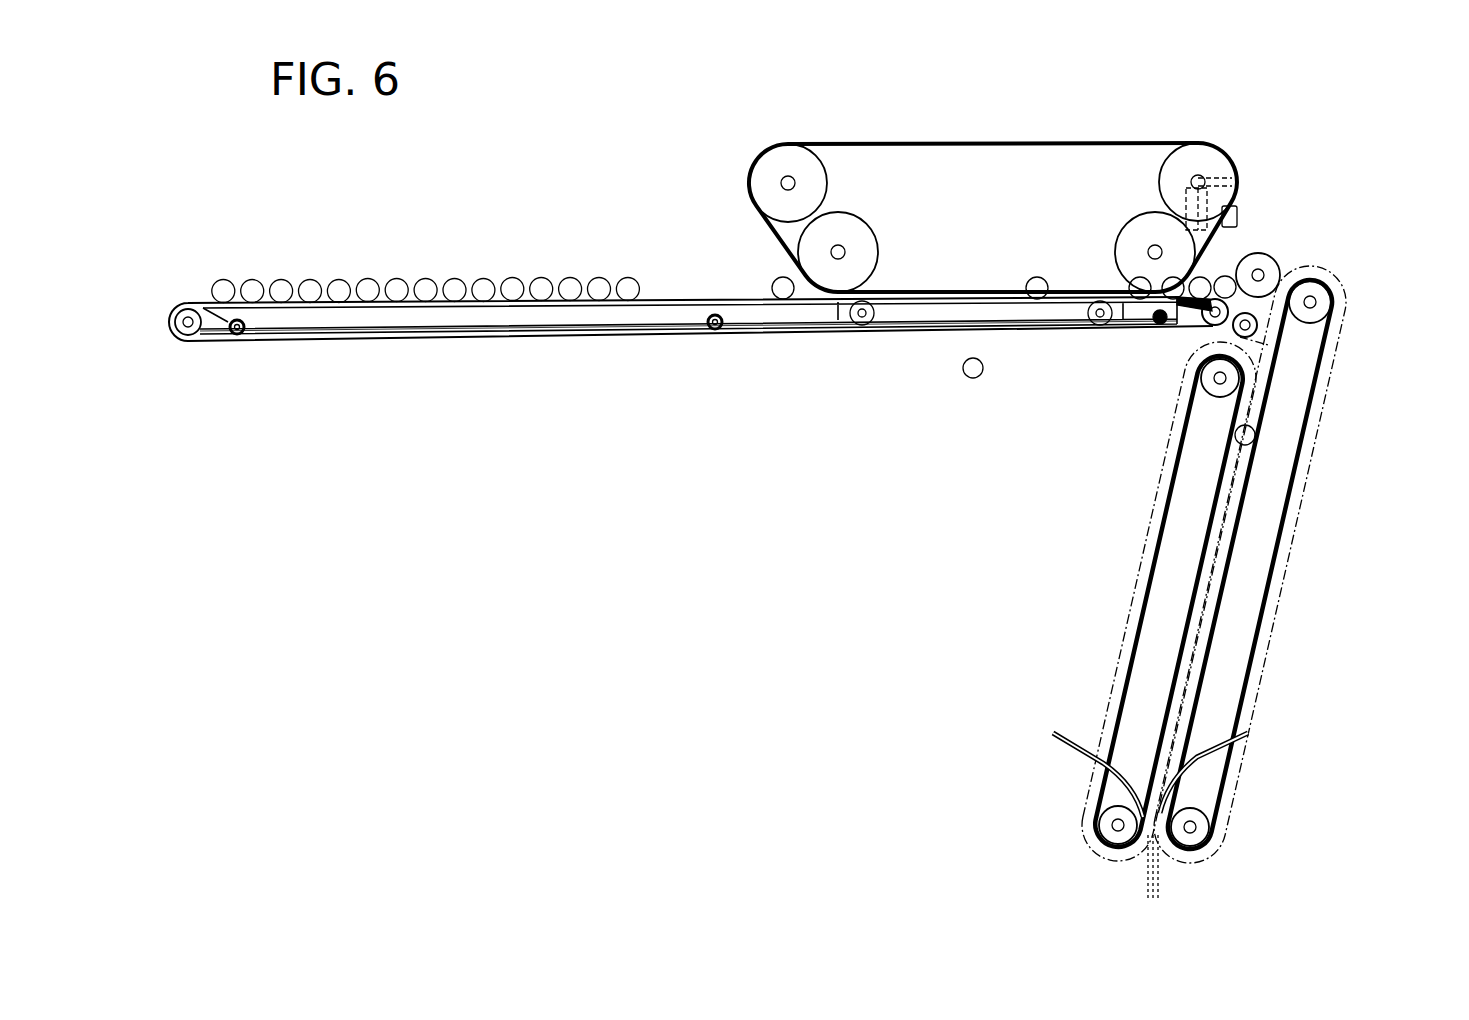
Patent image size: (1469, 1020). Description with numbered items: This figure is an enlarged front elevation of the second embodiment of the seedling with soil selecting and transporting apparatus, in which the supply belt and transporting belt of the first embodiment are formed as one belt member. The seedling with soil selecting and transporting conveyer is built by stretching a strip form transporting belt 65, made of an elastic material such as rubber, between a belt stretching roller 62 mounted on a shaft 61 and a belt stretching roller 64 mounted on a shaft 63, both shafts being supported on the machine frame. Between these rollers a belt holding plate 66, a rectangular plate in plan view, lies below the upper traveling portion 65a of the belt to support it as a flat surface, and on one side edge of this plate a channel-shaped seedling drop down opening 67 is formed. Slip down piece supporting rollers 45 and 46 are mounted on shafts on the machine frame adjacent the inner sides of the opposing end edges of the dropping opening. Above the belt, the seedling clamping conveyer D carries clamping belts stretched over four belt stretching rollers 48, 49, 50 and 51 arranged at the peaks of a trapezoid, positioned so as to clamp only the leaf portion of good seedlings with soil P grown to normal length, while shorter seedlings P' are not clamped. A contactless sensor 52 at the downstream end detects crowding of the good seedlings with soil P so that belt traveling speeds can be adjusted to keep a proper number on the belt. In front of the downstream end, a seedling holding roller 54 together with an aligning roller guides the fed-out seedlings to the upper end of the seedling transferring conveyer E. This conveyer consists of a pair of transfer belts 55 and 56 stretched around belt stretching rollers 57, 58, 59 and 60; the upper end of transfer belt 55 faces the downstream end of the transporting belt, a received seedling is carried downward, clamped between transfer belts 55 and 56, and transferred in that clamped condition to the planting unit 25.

The seedling clamping conveyer D is at (1237, 76).
The belt stretching roller 51 is at (797, 163).
The belt stretching roller 48 is at (863, 237).
The belt stretching roller 49 is at (1145, 227).
The belt stretching roller 50 is at (1175, 180).
The contactless sensor 52 is at (1238, 218).
The good seedling with soil P is at (816, 317).
The sheet P' is at (411, 247).
The strip form transporting belt 65 is at (621, 330).
The seedling drop down opening 67 is at (920, 320).
The shaft 61 is at (188, 335).
The belt stretching roller 62 is at (237, 334).
The belt holding plate 66 is at (340, 322).
The upper traveling portion 65a is at (672, 268).
The slip down piece supporting roller 45 is at (853, 328).
The slip down piece supporting roller 46 is at (1098, 328).
The belt stretching roller 64 is at (1205, 322).
The shaft 63 is at (1236, 333).
The transfer belt 55 is at (1272, 257).
The belt stretching roller 57 is at (1312, 300).
The transfer belt 56 is at (1145, 540).
The belt stretching roller 60 is at (1222, 378).
The seedling holding roller 54 is at (1252, 328).
The belt stretching roller 59 is at (1117, 825).
The belt stretching roller 58 is at (1190, 827).
The seedling transferring conveyer E is at (1297, 532).
The planting unit 25 is at (1162, 878).